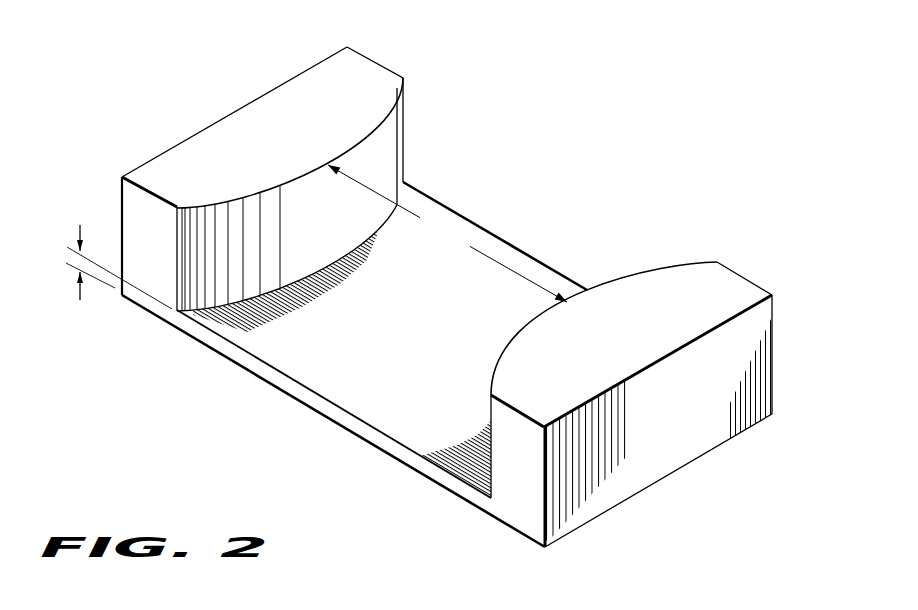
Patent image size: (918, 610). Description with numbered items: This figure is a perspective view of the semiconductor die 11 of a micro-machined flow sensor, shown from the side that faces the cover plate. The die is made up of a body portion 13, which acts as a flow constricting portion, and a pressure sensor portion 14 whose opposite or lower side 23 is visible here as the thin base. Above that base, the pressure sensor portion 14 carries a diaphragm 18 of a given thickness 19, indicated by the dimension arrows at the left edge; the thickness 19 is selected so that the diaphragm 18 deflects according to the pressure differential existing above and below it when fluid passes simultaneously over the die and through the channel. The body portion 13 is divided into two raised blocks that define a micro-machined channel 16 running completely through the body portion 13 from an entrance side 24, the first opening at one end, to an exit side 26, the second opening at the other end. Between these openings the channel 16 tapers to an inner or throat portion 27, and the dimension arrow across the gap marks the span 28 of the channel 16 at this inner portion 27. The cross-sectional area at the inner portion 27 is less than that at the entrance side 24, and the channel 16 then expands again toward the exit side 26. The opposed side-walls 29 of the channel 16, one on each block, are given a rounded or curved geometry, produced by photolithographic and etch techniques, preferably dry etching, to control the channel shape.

The semiconductor die 11 is at (720, 288).
The body portion 13 is at (663, 450).
The pressure sensor portion 14 is at (400, 462).
The channel 16 is at (559, 146).
The diaphragm 18 is at (297, 390).
The thickness 19 is at (90, 282).
The lower side 23 is at (527, 263).
The entrance side 24 is at (178, 205).
The exit side 26 is at (403, 78).
The inner portion 27 is at (333, 167).
The span 28 is at (447, 233).
The opposed side-walls 29 is at (378, 145).